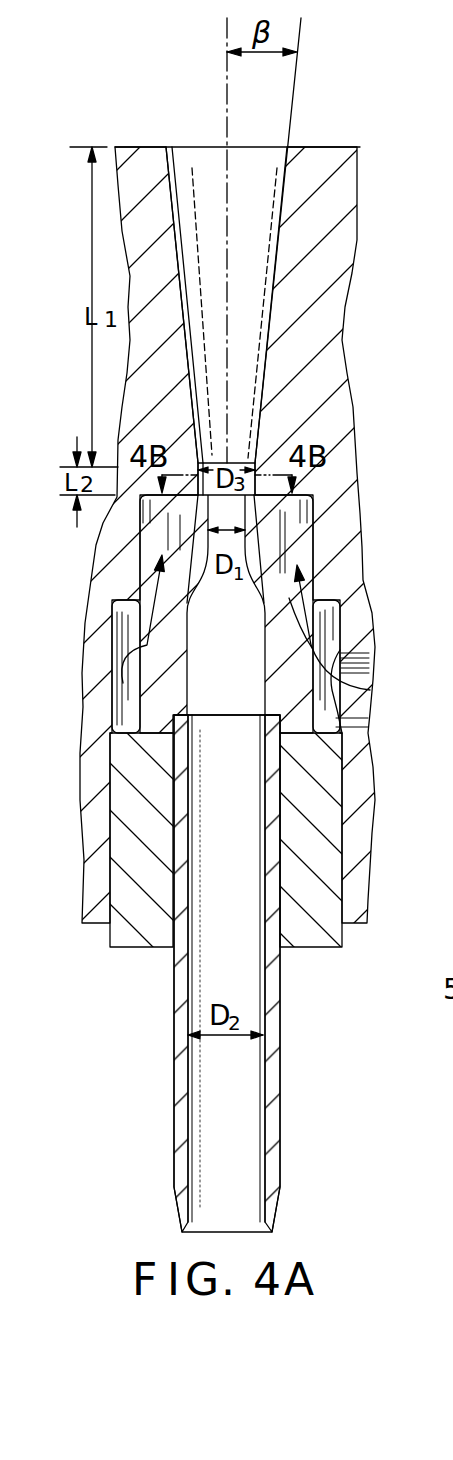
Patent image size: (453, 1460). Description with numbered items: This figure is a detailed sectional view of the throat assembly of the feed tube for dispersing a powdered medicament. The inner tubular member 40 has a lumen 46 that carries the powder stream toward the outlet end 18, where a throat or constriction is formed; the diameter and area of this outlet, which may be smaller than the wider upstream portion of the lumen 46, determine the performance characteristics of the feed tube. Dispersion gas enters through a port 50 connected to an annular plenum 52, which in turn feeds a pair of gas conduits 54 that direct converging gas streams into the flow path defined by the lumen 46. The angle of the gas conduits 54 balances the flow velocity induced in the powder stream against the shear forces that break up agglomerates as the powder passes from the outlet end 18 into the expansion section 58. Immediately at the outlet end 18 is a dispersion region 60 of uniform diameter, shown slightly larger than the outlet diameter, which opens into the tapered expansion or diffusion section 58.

The outlet end 18 is at (246, 515).
The inner tubular member 40 is at (178, 1018).
The lumen 46 is at (213, 973).
The port 50 is at (352, 707).
The annular plenum 52 is at (127, 713).
The gas conduits 54 is at (152, 563).
The expansion section 58 is at (253, 262).
The dispersion region 60 is at (235, 470).